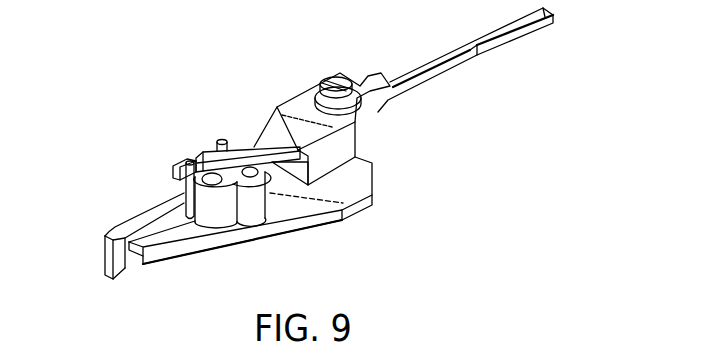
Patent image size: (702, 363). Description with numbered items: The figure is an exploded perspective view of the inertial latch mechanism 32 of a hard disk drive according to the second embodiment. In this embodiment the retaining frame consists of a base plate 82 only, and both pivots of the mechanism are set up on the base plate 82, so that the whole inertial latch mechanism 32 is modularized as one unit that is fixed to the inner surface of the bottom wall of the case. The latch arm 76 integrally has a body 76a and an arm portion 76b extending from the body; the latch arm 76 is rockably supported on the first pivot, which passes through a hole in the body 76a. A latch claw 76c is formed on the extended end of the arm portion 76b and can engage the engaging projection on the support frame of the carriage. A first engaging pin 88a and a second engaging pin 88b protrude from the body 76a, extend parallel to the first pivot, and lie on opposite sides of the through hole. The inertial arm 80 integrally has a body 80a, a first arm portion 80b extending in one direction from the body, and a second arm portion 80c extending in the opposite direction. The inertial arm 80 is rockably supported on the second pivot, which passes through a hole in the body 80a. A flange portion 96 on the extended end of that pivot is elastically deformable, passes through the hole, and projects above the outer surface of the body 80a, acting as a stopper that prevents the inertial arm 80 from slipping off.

The inertial latch mechanism 32 is at (133, 168).
The latch arm 76 is at (114, 196).
The body 76a is at (216, 212).
The arm portion 76b is at (108, 231).
The latch claw 76c is at (103, 255).
The inertial arm 80 is at (270, 66).
The body 80a is at (343, 161).
The first arm portion 80b is at (238, 146).
The second arm portion 80c is at (452, 66).
The base plate 82 is at (290, 211).
The first engaging pin 88a is at (186, 160).
The second engaging pin 88b is at (218, 137).
The flange portion 96 is at (337, 76).